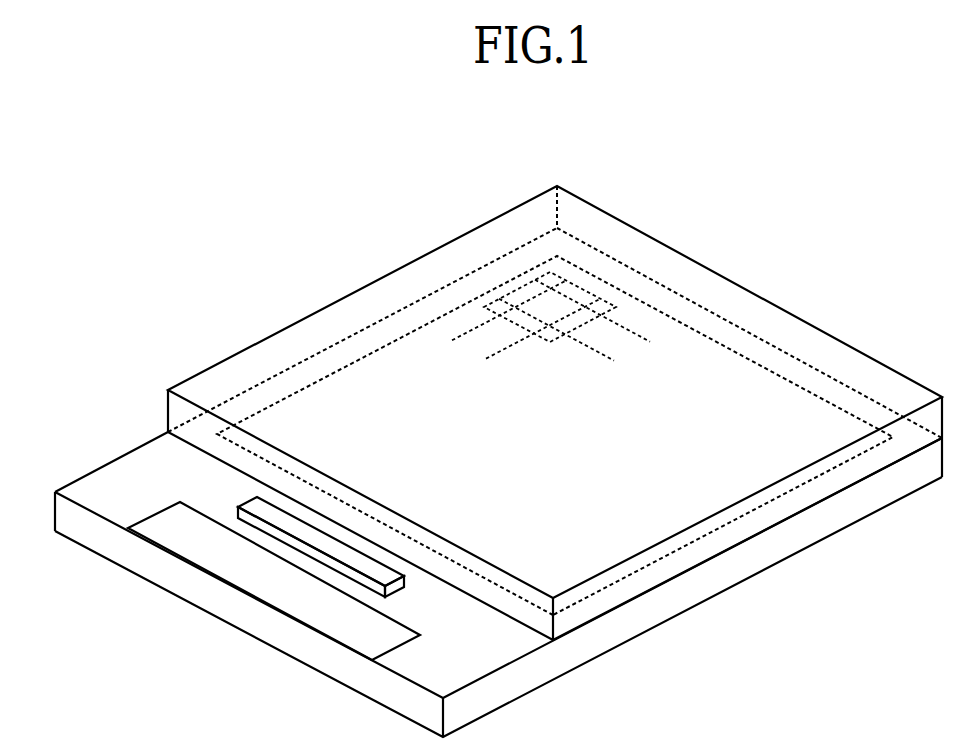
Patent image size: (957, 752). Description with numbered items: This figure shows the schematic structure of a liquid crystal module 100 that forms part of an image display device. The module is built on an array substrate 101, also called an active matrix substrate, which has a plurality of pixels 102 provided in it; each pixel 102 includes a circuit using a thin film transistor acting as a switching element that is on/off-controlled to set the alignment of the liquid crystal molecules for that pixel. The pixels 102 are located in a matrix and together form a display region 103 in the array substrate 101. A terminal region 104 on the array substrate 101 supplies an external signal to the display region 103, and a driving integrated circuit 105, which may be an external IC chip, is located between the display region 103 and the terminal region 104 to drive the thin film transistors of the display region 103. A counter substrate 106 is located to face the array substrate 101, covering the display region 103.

The liquid crystal module 100 is at (464, 191).
The array substrate 101 is at (857, 512).
The pixels 102 is at (548, 337).
The display region 103 is at (682, 548).
The terminal region 104 is at (387, 643).
The driving integrated circuit 105 is at (390, 590).
The counter substrate 106 is at (173, 410).